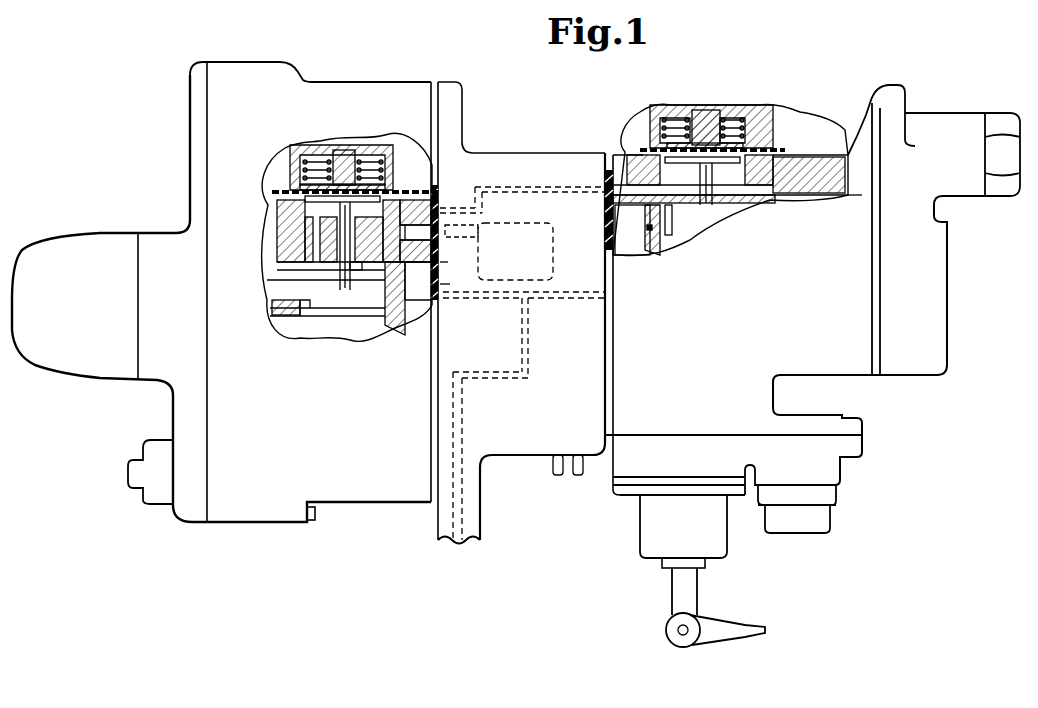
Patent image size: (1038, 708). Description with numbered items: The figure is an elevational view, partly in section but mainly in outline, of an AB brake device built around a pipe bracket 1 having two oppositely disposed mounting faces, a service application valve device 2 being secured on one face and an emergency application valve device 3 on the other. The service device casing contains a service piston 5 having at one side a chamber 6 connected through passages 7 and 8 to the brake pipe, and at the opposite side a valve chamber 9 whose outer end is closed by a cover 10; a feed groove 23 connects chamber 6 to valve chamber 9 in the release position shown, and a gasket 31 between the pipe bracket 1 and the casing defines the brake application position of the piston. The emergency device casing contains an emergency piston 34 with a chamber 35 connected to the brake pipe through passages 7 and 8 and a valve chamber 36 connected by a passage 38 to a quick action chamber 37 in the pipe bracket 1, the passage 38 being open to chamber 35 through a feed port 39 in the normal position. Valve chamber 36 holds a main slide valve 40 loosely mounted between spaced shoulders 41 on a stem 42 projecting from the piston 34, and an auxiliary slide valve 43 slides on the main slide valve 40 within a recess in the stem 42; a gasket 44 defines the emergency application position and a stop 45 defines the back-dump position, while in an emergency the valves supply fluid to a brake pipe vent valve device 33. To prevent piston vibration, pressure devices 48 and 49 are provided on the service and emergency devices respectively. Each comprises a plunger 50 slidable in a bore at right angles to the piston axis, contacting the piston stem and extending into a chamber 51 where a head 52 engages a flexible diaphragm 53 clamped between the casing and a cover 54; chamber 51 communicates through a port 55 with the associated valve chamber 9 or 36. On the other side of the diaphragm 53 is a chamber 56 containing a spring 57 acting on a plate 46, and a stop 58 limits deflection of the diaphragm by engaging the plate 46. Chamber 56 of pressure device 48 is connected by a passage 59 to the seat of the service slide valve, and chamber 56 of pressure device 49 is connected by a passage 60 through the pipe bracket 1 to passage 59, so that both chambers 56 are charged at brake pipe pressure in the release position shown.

The pipe bracket 1 is at (527, 152).
The service application valve device 2 is at (872, 113).
The emergency application valve device 3 is at (366, 82).
The service piston 5 is at (646, 222).
The chamber 6 is at (620, 205).
The passage 7 is at (575, 298).
The passage 8 is at (465, 460).
The valve chamber 9 is at (660, 207).
The cover 10 is at (933, 303).
The feed groove 23 is at (630, 190).
The gasket 31 is at (612, 240).
The brake pipe vent valve device 33 is at (228, 76).
The emergency piston 34 is at (448, 267).
The chamber 35 is at (430, 311).
The valve chamber 36 is at (283, 272).
The quick action chamber 37 is at (555, 268).
The passage 38 is at (461, 236).
The feed port 39 is at (438, 195).
The main slide valve 40 is at (324, 330).
The shoulder 41 is at (388, 320).
The stem 42 is at (306, 314).
The auxiliary slide valve 43 is at (283, 313).
The gasket 44 is at (452, 283).
The stop 45 is at (350, 266).
The plate 46 is at (340, 158).
The pressure device 48 is at (737, 165).
The pressure device 49 is at (534, 222).
The plunger 50 is at (345, 270).
The chamber 51 is at (300, 205).
The head 52 is at (300, 215).
The flexible diaphragm 53 is at (285, 192).
The cover 54 is at (307, 144).
The port 55 is at (310, 265).
The chamber 56 is at (382, 170).
The spring 57 is at (375, 153).
The stop 58 is at (350, 181).
The passage 59 is at (826, 196).
The passage 60 is at (548, 189).